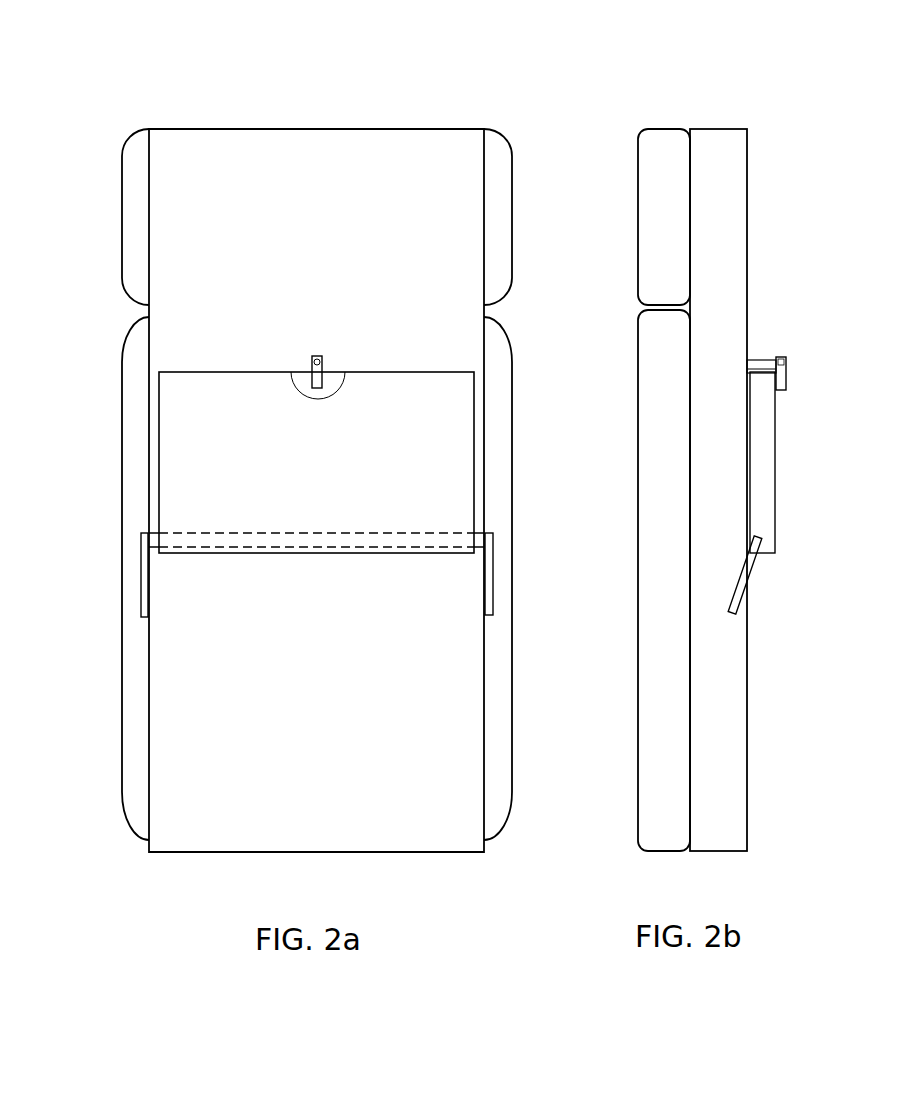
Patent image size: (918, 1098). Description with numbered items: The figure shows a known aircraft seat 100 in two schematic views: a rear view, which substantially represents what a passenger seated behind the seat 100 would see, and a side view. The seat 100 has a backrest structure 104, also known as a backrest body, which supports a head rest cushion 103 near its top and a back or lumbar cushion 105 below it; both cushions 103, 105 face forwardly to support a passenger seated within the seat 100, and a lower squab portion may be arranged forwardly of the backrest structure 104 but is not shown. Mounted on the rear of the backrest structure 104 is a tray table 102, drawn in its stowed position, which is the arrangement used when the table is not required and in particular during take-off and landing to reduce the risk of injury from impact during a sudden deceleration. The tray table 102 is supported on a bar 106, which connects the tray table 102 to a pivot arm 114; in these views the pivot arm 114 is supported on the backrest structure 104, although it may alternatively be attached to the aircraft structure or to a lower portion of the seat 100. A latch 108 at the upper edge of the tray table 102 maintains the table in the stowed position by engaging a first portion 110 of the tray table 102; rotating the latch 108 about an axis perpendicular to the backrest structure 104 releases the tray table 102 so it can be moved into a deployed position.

In FIG. 2a, the seat 100 is at (244, 104).
In FIG. 2b, the seat 100 is at (766, 94).
In FIG. 2a, the tray table 102 is at (461, 398).
In FIG. 2b, the tray table 102 is at (763, 478).
In FIG. 2a, the head rest cushion 103 is at (132, 150).
In FIG. 2b, the head rest cushion 103 is at (660, 190).
In FIG. 2a, the backrest structure 104 is at (441, 157).
In FIG. 2b, the backrest structure 104 is at (735, 268).
In FIG. 2a, the back or lumbar cushion 105 is at (132, 672).
In FIG. 2b, the back or lumbar cushion 105 is at (650, 665).
In FIG. 2a, the bar 106 is at (477, 533).
In FIG. 2a, the latch 108 is at (316, 356).
In FIG. 2b, the latch 108 is at (780, 357).
In FIG. 2a, the first portion of the tray table 110 is at (302, 379).
In FIG. 2a, the pivot arm 114 is at (487, 575).
In FIG. 2b, the pivot arm 114 is at (745, 575).